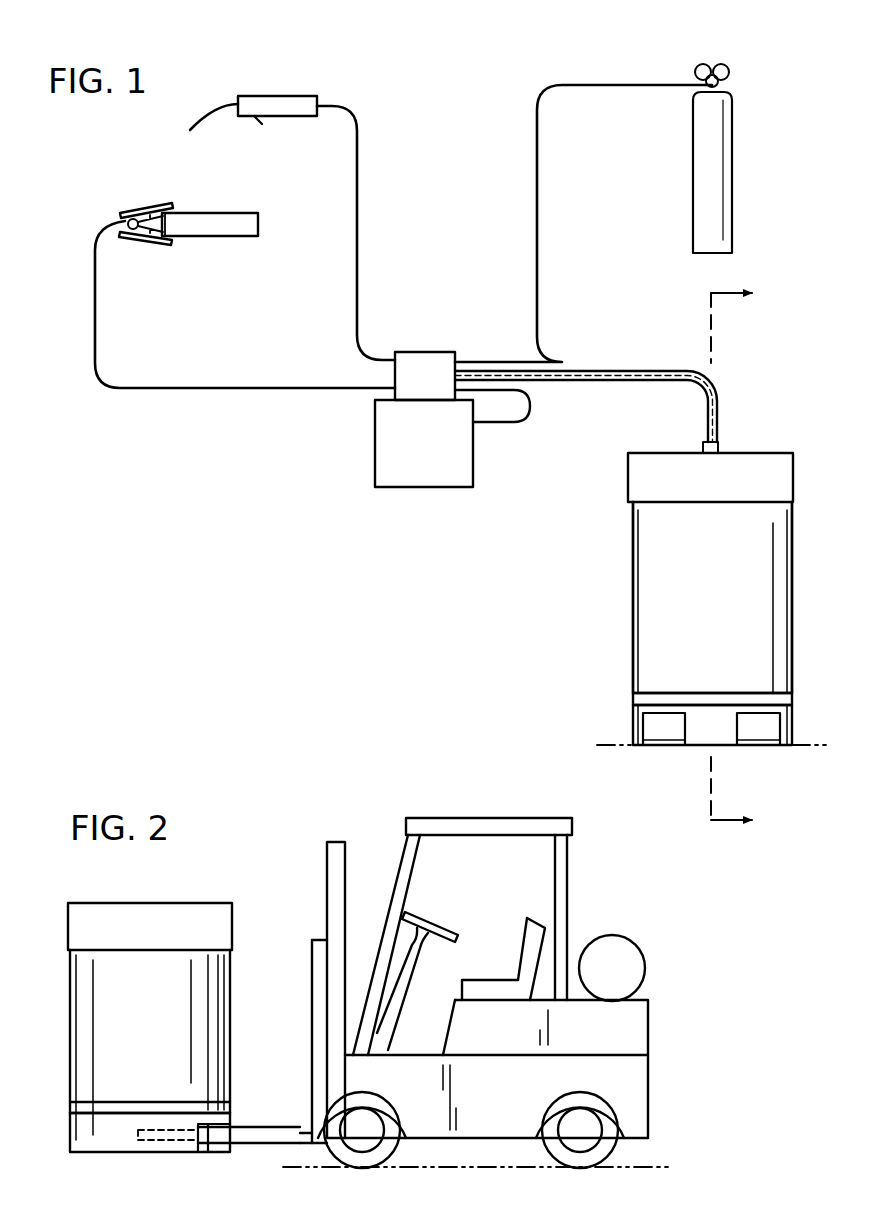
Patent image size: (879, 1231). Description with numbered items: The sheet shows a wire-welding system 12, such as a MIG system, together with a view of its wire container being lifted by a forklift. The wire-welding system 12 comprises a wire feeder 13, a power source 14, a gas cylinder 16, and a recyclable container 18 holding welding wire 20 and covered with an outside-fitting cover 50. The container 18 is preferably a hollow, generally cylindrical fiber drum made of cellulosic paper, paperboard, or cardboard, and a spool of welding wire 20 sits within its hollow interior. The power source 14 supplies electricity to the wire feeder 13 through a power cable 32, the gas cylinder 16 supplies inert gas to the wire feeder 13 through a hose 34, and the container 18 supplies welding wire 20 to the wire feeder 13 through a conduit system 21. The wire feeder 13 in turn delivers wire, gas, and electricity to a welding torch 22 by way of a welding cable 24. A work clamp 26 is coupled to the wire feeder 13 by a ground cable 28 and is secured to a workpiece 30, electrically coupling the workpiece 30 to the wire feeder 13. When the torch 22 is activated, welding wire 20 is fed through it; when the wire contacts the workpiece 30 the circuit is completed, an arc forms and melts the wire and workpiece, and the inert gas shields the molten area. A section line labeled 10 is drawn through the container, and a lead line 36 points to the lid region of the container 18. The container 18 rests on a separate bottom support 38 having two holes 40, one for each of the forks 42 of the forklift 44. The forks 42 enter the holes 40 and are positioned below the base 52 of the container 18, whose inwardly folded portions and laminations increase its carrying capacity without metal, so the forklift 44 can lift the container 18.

In FIG. 1, the section line 10 is at (716, 560).
In FIG. 1, the wire-welding system 12 is at (786, 94).
In FIG. 1, the wire feeder 13 is at (423, 352).
In FIG. 1, the power source 14 is at (473, 470).
In FIG. 1, the gas cylinder 16 is at (733, 215).
In FIG. 1, the recyclable container 18 is at (793, 622).
In FIG. 2, the recyclable container 18 is at (70, 960).
In FIG. 1, the welding wire 20 is at (595, 371).
In FIG. 1, the conduit system 21 is at (717, 400).
In FIG. 1, the welding torch 22 is at (278, 96).
In FIG. 1, the welding cable 24 is at (360, 205).
In FIG. 1, the work clamp 26 is at (148, 210).
In FIG. 1, the ground cable 28 is at (190, 390).
In FIG. 1, the workpiece 30 is at (258, 224).
In FIG. 1, the power cable 32 is at (532, 402).
In FIG. 1, the hose 34 is at (535, 252).
In FIG. 1, the container lid 36 is at (762, 455).
In FIG. 1, the bottom support 38 is at (792, 718).
In FIG. 2, the bottom support 38 is at (110, 1155).
In FIG. 1, the holes 40 is at (667, 732).
In FIG. 2, the holes 40 is at (215, 1122).
In FIG. 2, the forks 42 is at (245, 1145).
In FIG. 2, the forklift 44 is at (449, 815).
In FIG. 1, the outside-fitting cover 50 is at (780, 482).
In FIG. 1, the base 52 is at (792, 700).